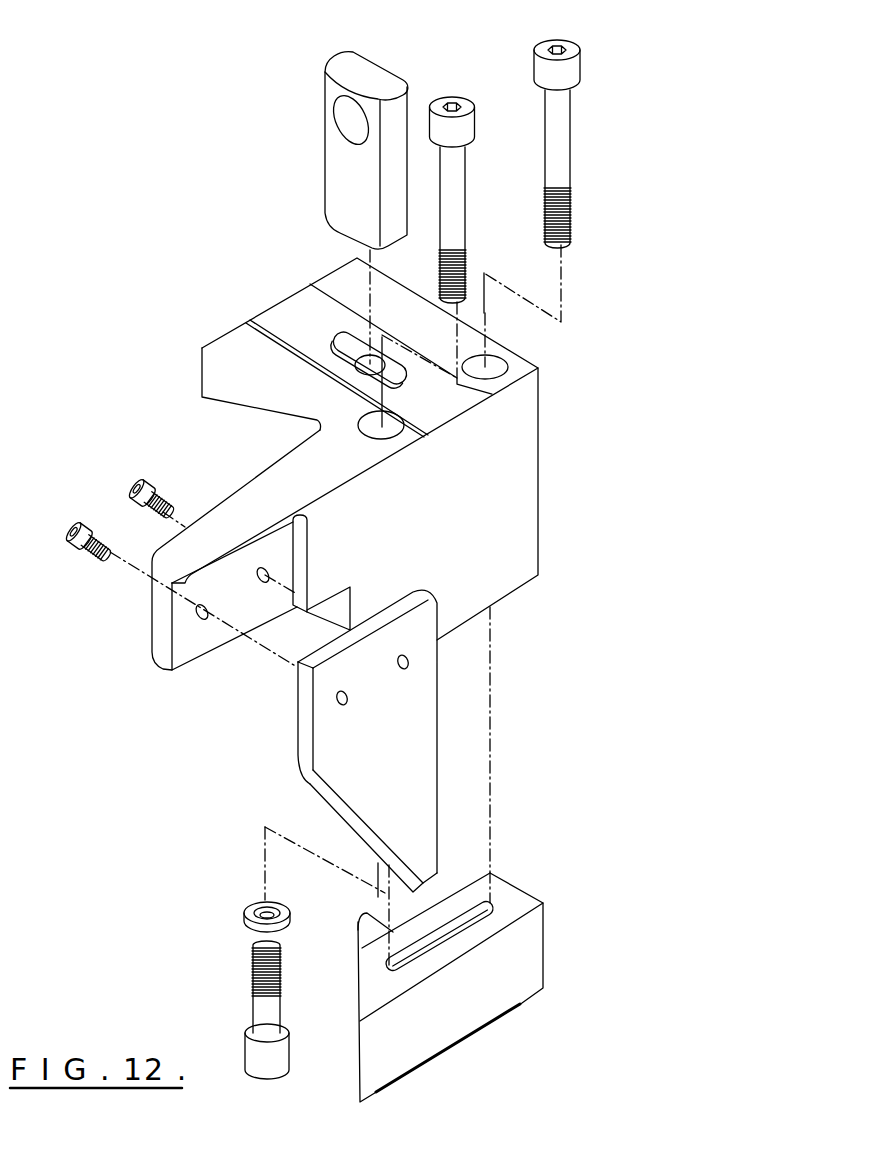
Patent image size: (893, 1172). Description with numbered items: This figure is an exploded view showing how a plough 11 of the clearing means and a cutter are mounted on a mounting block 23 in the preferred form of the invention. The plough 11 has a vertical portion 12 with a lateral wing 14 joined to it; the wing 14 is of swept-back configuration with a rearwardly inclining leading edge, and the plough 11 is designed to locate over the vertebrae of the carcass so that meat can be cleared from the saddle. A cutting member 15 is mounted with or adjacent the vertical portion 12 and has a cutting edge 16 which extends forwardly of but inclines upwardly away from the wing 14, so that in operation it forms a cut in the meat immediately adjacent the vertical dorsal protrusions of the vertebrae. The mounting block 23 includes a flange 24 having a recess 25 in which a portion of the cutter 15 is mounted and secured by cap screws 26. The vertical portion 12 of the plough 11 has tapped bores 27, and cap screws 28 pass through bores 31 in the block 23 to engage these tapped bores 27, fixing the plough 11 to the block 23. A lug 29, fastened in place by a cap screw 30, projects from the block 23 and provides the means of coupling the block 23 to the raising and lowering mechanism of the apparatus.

The plough 11 is at (528, 1026).
The vertical portion 12 is at (535, 948).
The lateral wing 14 is at (356, 935).
The cutting member 15 is at (440, 730).
The cutting edge 16 is at (340, 807).
The mounting block 23 is at (533, 513).
The flange 24 is at (158, 620).
The recess 25 is at (203, 648).
The cap screws 26 is at (128, 488).
The tapped bores 27 is at (503, 897).
The cap screws 28 is at (452, 97).
The lug 29 is at (328, 148).
The cap screw 30 is at (253, 982).
The bores 31 is at (406, 423).